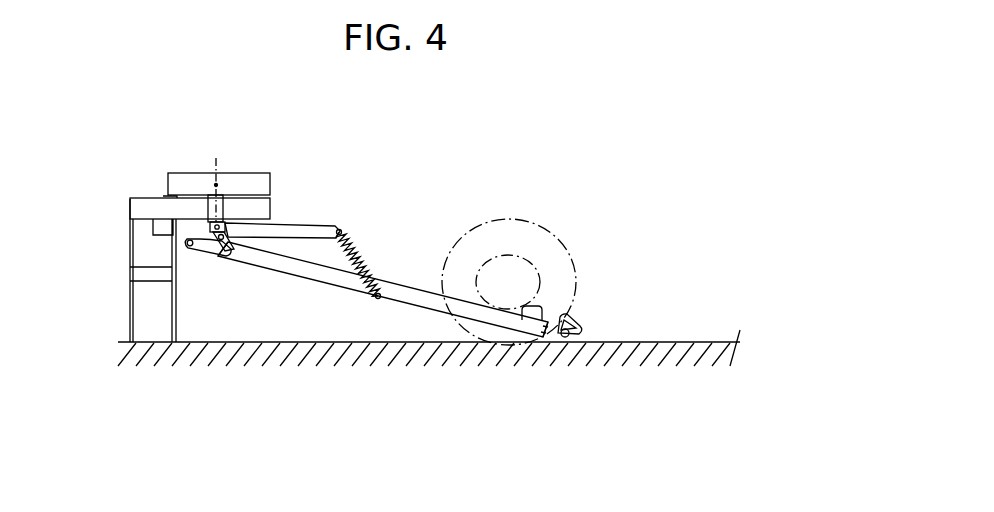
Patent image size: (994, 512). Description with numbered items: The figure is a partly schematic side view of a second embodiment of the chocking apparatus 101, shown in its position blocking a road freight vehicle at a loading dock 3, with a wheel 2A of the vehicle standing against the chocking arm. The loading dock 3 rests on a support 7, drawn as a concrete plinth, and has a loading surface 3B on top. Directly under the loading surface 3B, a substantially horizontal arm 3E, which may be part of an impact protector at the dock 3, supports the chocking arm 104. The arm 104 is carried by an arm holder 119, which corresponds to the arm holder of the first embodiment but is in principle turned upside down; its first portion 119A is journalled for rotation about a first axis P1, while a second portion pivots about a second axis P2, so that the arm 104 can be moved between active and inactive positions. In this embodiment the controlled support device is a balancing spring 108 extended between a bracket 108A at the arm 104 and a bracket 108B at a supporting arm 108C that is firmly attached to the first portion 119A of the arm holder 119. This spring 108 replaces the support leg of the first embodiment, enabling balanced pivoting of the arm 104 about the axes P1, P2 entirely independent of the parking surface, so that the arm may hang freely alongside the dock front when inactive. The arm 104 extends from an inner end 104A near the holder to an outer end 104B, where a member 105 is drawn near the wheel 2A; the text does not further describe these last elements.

The loading dock 3 is at (155, 143).
The loading surface 3B is at (252, 170).
The substantially horizontal arm 3E is at (182, 207).
The first vertical axis P1 is at (214, 185).
The second horizontal axis P2 is at (222, 240).
The arm holder 119 is at (176, 258).
The first portion of the arm holder 119A is at (210, 224).
The support 7 is at (109, 356).
The arm 104 is at (422, 333).
The ramp base end 104A is at (201, 252).
The ramp tip end 104B is at (548, 334).
The handle / stopper 105 is at (590, 352).
The balancing spring 108 is at (370, 216).
The bracket 108A is at (377, 299).
The bracket 108B is at (339, 229).
The supporting arm 108C is at (287, 222).
The chocking apparatus 101 is at (426, 236).
The front wheel 2A is at (557, 242).